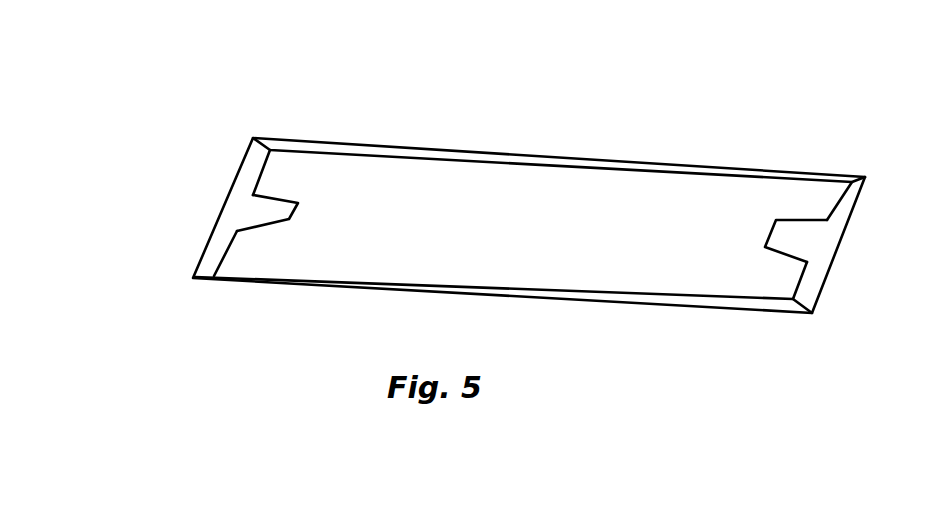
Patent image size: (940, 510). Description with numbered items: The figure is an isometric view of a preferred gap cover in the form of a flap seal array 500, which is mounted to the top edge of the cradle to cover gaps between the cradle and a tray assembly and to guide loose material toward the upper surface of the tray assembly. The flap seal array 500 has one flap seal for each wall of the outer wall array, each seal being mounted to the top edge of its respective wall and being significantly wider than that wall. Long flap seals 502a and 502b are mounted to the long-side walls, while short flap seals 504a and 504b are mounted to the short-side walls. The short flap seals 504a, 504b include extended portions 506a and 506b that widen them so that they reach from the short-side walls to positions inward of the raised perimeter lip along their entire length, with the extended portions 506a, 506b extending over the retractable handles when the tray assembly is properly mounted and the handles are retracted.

The flap seal array 500 is at (674, 118).
The long flap seal 502a is at (513, 160).
The long flap seal 502b is at (632, 297).
The short flap seal 504a is at (243, 158).
The short flap seal 504b is at (810, 290).
The extended portion 506a is at (286, 216).
The extended portion 506b is at (778, 232).